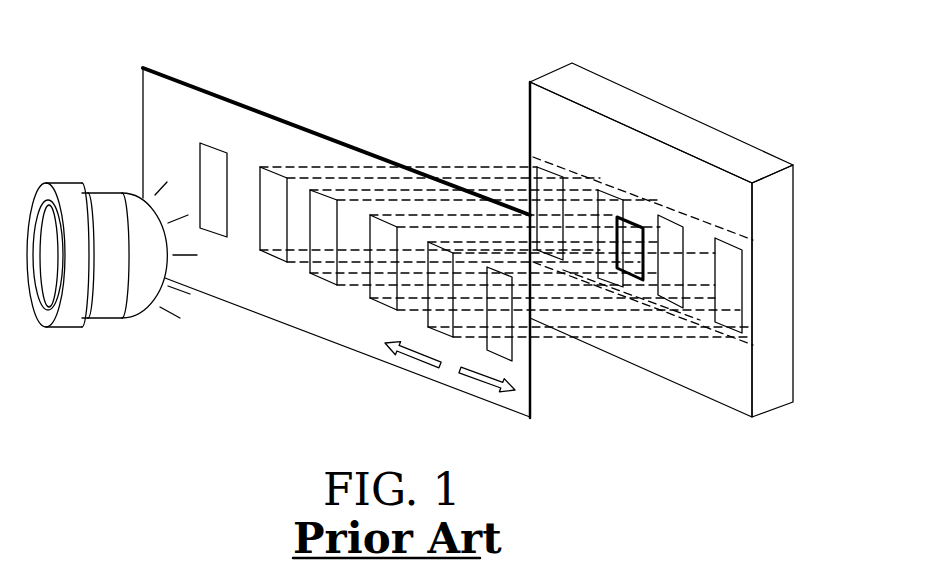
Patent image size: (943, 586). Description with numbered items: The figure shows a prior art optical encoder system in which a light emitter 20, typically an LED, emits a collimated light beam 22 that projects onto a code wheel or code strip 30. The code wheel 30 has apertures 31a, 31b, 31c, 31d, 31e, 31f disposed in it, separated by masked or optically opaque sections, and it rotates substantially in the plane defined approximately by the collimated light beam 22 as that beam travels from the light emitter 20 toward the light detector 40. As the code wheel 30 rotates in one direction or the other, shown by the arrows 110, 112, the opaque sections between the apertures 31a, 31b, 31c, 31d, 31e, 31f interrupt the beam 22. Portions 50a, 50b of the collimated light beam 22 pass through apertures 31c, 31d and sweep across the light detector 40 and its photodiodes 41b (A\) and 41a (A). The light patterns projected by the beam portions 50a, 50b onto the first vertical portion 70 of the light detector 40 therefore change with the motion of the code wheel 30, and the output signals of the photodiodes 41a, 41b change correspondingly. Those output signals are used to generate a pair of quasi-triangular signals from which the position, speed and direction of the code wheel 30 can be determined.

The light emitter 20 is at (104, 336).
The collimated light beam 22 is at (155, 178).
The code wheel or code strip 30 is at (309, 360).
The aperture 31a is at (210, 157).
The aperture 31b is at (275, 185).
The aperture 31c is at (325, 200).
The aperture 31d is at (380, 227).
The aperture 31e is at (437, 255).
The aperture 31f is at (513, 352).
The light detector 40 is at (687, 222).
The photodiode 41a is at (633, 225).
The photodiode 41b is at (677, 284).
The portion of collimated light beam 50a is at (576, 302).
The portion of collimated light beam 50b is at (527, 193).
The first vertical portion of light detector 70 is at (748, 300).
The direction of movement arrow 110 is at (417, 352).
The second direction 112 is at (475, 378).